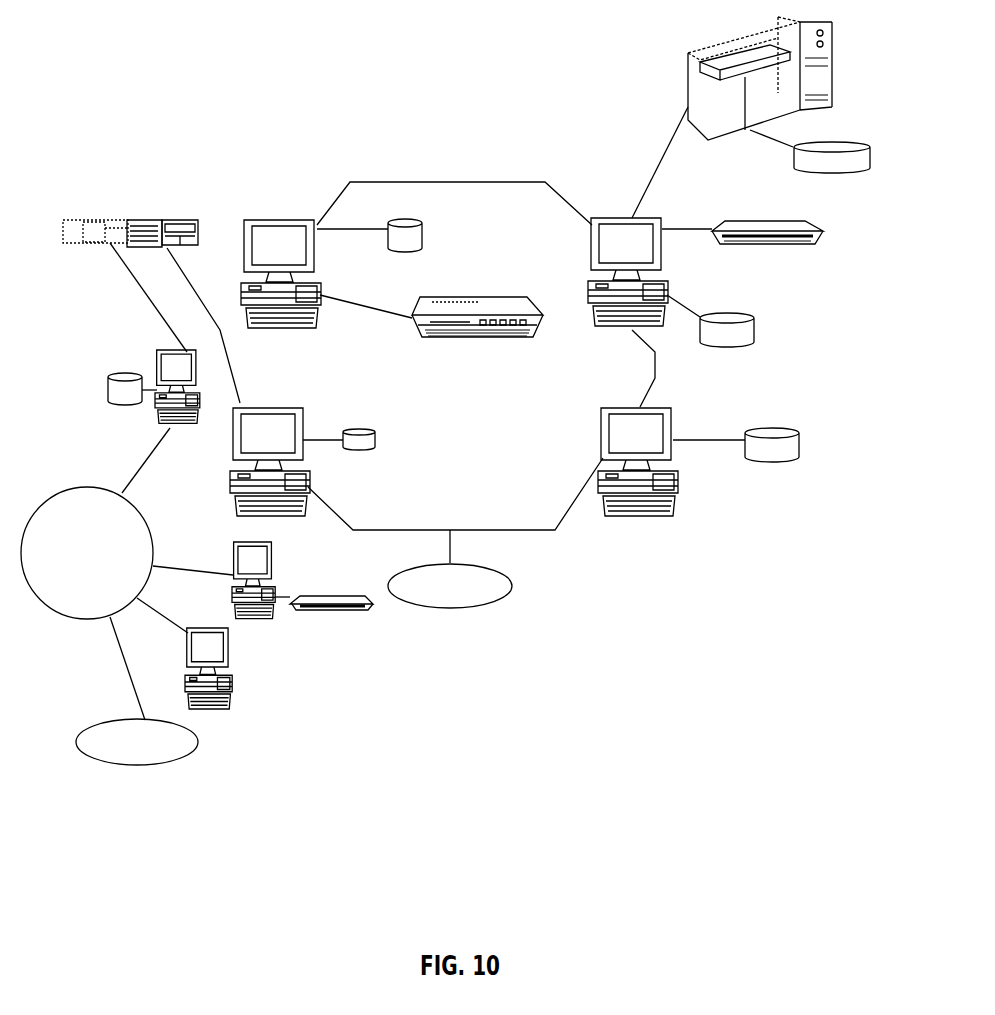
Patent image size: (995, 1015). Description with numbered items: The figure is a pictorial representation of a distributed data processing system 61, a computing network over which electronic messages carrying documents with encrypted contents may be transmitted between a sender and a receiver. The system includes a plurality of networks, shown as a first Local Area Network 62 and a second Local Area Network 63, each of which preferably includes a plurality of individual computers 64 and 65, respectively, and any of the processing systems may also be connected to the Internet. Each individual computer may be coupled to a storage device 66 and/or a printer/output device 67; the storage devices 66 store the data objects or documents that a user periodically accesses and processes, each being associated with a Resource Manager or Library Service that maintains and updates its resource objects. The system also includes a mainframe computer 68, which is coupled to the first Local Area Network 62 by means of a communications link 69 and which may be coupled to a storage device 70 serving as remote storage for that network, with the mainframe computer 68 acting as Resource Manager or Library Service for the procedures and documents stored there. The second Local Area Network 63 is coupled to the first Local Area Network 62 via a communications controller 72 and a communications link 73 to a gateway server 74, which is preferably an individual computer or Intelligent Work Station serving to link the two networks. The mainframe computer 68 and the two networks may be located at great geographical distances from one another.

The distributed data processing system 61 is at (463, 172).
The Local Area Network 62 is at (555, 530).
The Local Area Network 63 is at (88, 485).
The individual computer 64 is at (272, 216).
The individual computer 65 is at (273, 547).
The storage device 66 is at (422, 233).
The printer/output device 67 is at (478, 303).
The mainframe computer 68 is at (727, 55).
The communications link 69 is at (187, 283).
The storage device 70 is at (823, 142).
The communications controller 72 is at (197, 222).
The communications link 73 is at (140, 288).
The gateway server 74 is at (157, 353).